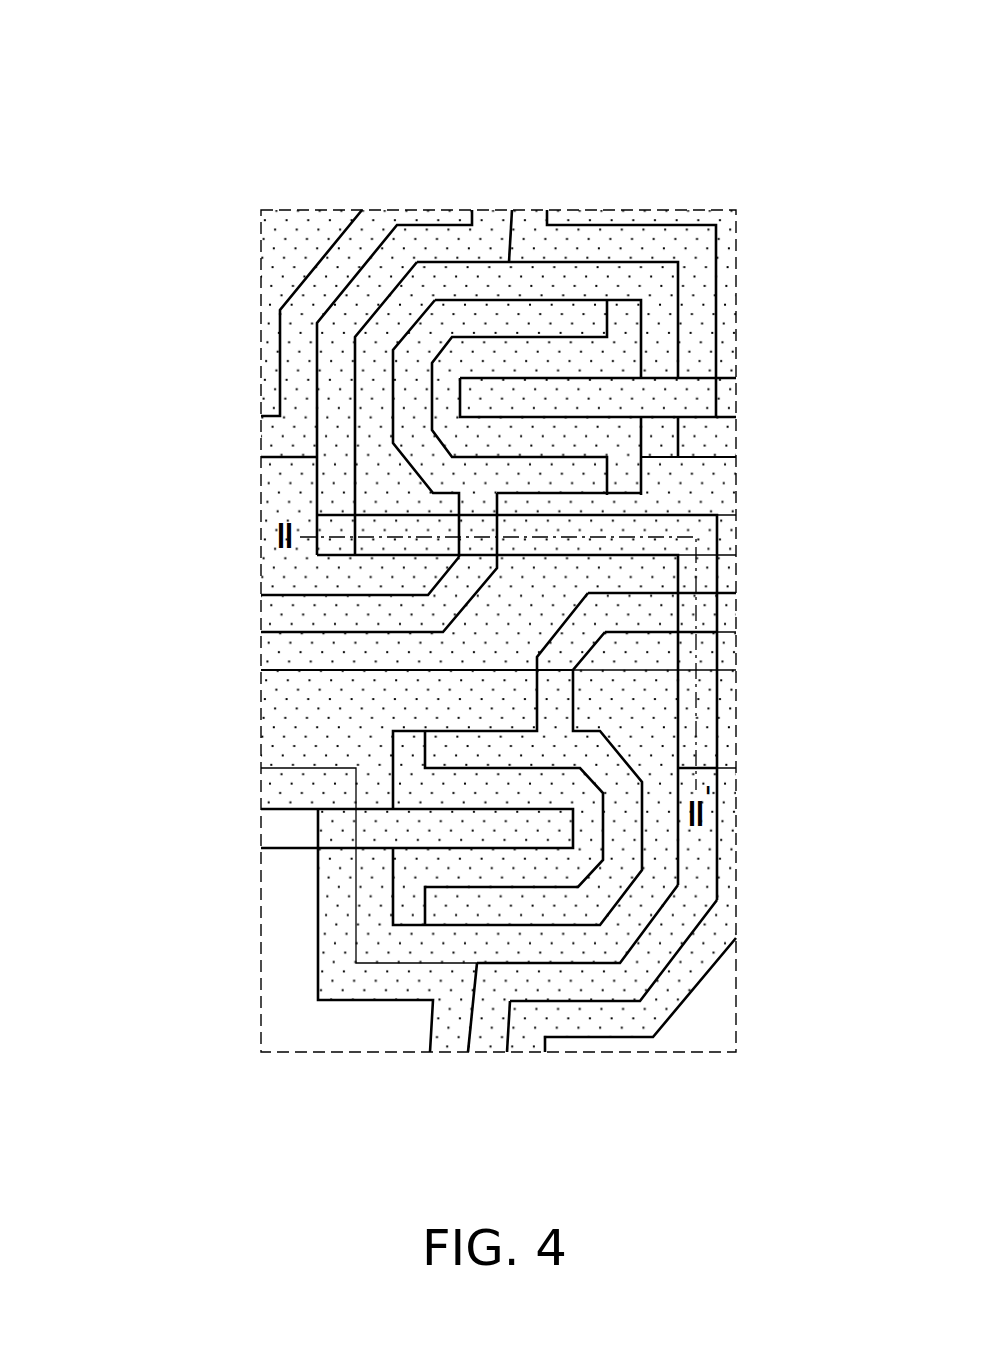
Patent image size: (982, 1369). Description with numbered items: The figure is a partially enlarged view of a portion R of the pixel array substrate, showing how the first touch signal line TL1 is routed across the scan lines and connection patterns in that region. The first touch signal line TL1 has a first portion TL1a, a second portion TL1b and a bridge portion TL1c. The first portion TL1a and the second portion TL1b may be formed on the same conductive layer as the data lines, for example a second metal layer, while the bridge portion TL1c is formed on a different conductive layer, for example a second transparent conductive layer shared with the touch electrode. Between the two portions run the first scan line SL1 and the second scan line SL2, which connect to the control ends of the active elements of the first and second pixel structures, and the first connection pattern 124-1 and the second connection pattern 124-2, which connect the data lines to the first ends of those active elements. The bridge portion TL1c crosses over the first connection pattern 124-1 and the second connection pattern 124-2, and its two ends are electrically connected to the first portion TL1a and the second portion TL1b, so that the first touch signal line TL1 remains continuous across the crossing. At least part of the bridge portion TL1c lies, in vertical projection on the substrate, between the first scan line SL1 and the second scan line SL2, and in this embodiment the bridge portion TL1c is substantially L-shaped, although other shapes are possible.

The first touch signal line TL1 is at (108, 5).
The first portion of the first touch signal line TL1a is at (365, 290).
The second portion of the first touch signal line TL1b is at (492, 1027).
The bridge portion of the first touch signal line TL1c is at (385, 515).
The portion R is at (736, 292).
The first scan line SL1 is at (727, 490).
The second scan line SL2 is at (727, 722).
The first connection pattern 124-1 is at (300, 610).
The second connection pattern 124-2 is at (737, 612).